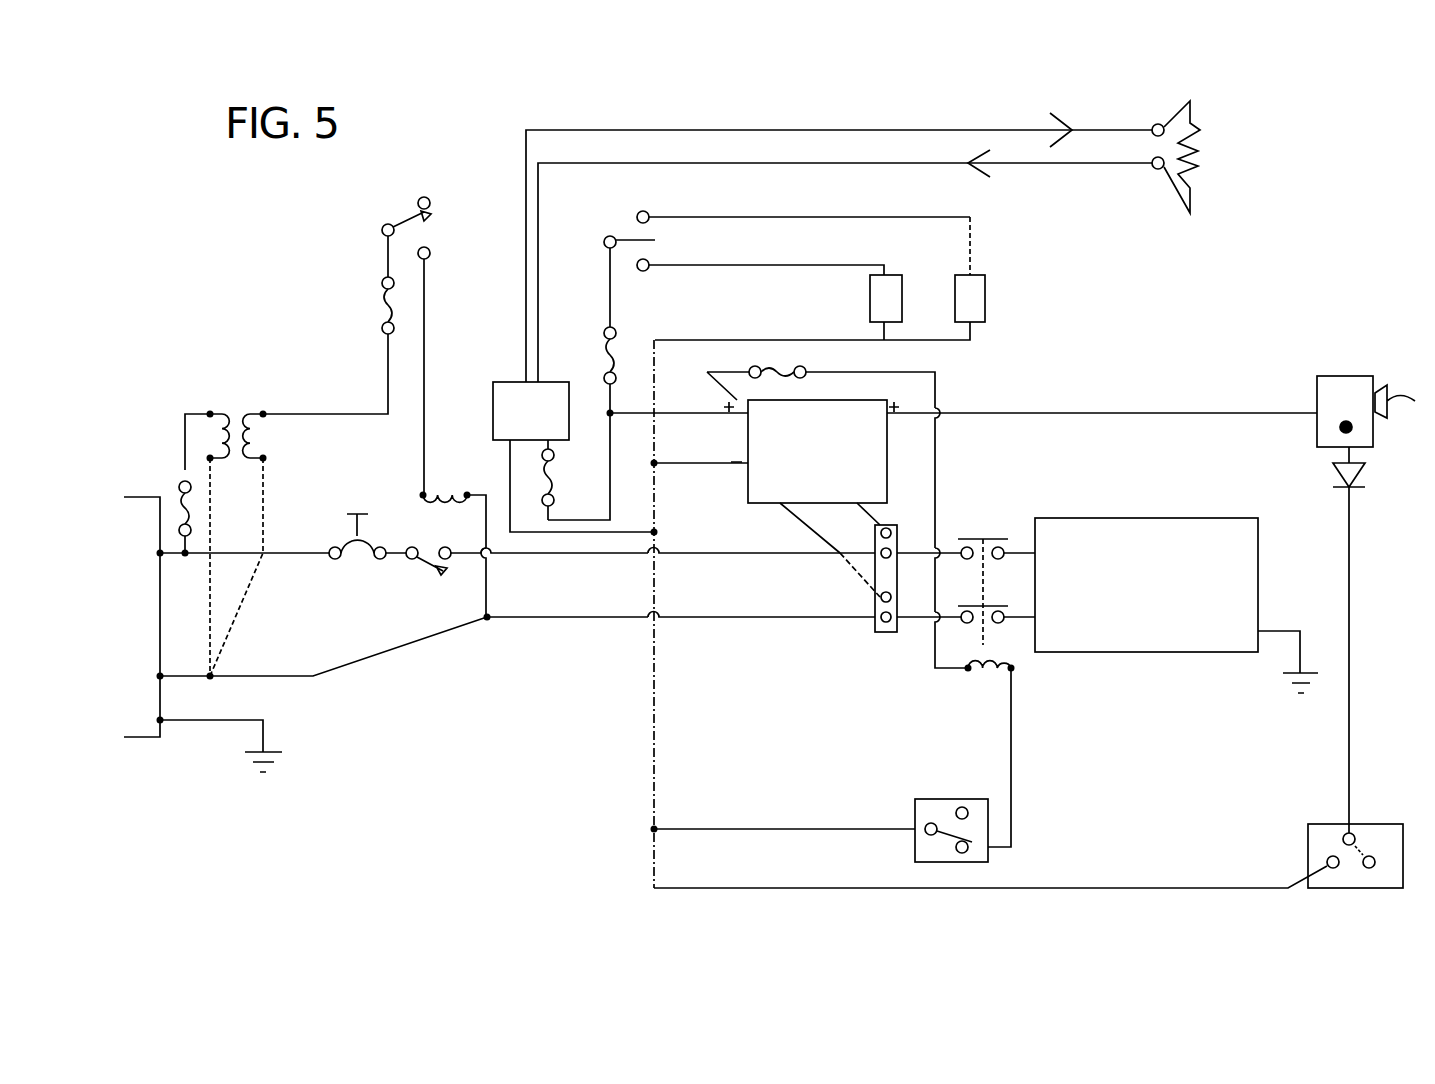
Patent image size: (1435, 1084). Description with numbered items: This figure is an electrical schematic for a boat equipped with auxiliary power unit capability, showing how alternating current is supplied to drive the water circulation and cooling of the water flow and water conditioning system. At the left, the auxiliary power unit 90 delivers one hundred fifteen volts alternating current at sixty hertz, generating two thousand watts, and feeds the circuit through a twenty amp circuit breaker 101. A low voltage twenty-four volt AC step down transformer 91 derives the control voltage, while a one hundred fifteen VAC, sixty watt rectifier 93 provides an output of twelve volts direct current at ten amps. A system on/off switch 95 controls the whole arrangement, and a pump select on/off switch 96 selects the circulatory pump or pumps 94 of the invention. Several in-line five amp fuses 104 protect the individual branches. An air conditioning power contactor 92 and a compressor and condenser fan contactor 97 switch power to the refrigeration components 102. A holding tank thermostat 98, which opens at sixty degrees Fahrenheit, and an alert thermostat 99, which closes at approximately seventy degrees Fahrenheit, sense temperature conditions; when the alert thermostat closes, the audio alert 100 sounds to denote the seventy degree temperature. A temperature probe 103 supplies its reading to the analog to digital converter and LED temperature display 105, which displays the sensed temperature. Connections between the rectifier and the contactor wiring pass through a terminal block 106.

The auxiliary power unit 90 is at (146, 490).
The step down transformer 91 is at (222, 412).
The air conditioning power contactor 92 is at (443, 490).
The rectifier 93 is at (773, 473).
The circulatory pump 94 is at (868, 287).
The system on/off switch 95 is at (385, 226).
The pump select on/off switch 96 is at (605, 241).
The compressor and condenser fan contactor 97 is at (1000, 671).
The holding tank thermostat 98 is at (962, 790).
The alert thermostat 99 is at (1367, 820).
The audio alert 100 is at (1337, 375).
The circuit breaker 101 is at (357, 510).
The refrigeration components 102 is at (1148, 517).
The temperature probe 103 is at (1205, 143).
The in-line fuse 104 is at (181, 500).
The analog to digital converter and LED temperature display 105 is at (512, 388).
The terminal block 106 is at (887, 632).